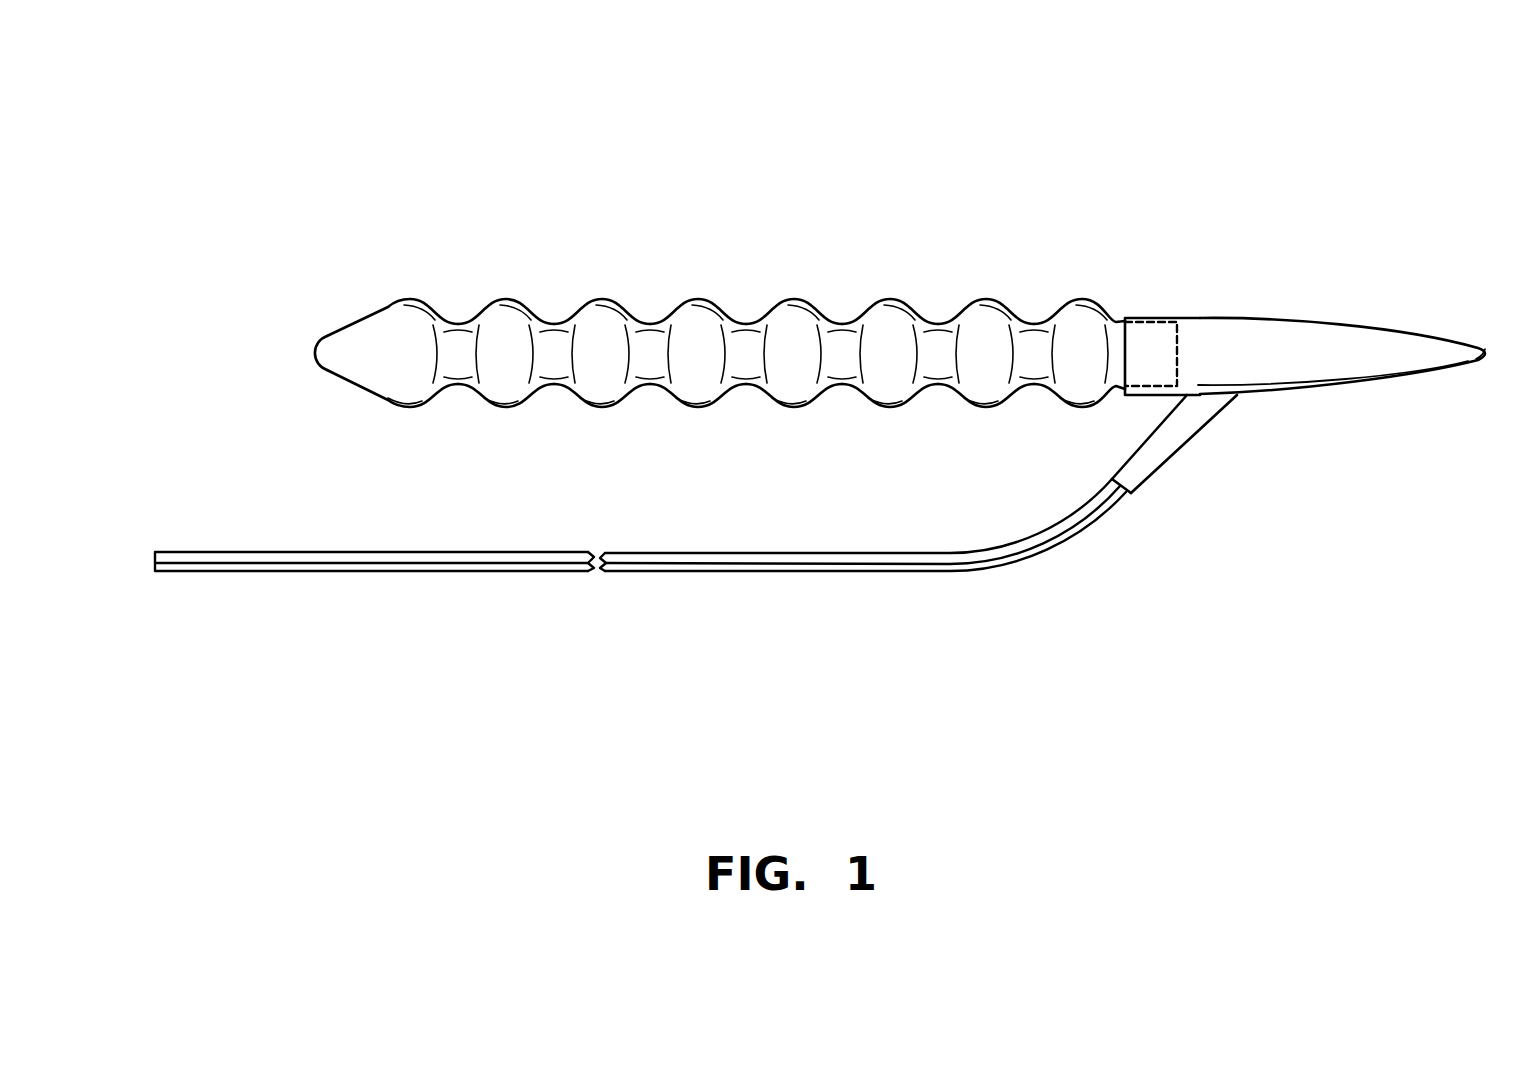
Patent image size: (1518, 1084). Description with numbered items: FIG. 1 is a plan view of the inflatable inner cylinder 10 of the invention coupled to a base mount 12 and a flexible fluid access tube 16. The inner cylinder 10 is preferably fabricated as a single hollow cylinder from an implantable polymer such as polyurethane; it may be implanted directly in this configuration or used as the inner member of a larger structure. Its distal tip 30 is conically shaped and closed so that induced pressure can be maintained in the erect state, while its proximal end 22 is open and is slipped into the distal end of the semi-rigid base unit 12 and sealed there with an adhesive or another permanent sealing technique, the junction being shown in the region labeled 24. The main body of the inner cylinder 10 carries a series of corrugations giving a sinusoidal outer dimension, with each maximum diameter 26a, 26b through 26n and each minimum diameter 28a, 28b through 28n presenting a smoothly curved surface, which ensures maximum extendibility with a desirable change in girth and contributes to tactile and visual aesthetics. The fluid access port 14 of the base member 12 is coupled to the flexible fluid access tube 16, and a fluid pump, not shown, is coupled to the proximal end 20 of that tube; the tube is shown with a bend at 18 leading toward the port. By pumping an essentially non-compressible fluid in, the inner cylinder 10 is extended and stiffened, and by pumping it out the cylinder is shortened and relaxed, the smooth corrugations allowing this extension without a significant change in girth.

The inner cylinder 10 is at (428, 132).
The base mount 12 is at (1357, 345).
The fluid access port 14 is at (1190, 423).
The fluid access tube 16 is at (1007, 562).
The tubing joint 18 is at (1128, 493).
The proximal end of flexible fluid access tube 20 is at (152, 566).
The proximal end of inner cylinder 22 is at (1156, 357).
The connector housing 24 is at (1122, 322).
The maximum diameter 26a is at (1085, 392).
The maximum diameter 26b is at (987, 392).
The maximum diameter 26n is at (503, 388).
The minimum diameter 28a is at (1037, 324).
The minimum diameter 28b is at (942, 324).
The minimum diameter 28n is at (460, 323).
The distal tip 30 is at (398, 328).